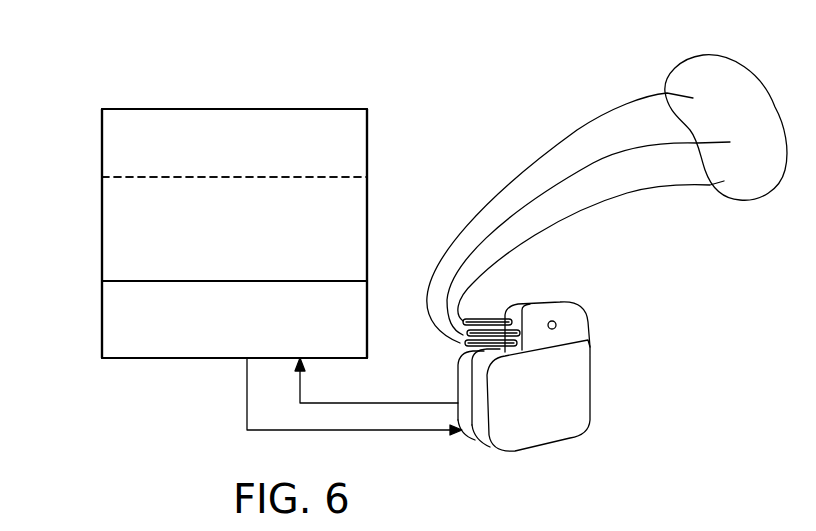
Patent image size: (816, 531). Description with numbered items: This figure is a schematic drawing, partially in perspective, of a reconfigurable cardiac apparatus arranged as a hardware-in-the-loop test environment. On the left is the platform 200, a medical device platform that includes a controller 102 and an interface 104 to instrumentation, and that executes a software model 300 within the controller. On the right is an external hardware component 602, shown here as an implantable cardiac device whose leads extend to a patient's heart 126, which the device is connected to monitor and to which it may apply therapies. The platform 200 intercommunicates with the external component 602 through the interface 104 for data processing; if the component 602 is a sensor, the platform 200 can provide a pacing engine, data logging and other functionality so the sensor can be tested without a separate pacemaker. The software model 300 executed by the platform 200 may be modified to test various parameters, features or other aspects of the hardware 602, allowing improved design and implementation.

The platform 200 is at (78, 108).
The software model 300 is at (234, 154).
The controller 102 is at (219, 237).
The interface 104 is at (219, 332).
The heart 126 is at (757, 103).
The external hardware component 602 is at (573, 413).